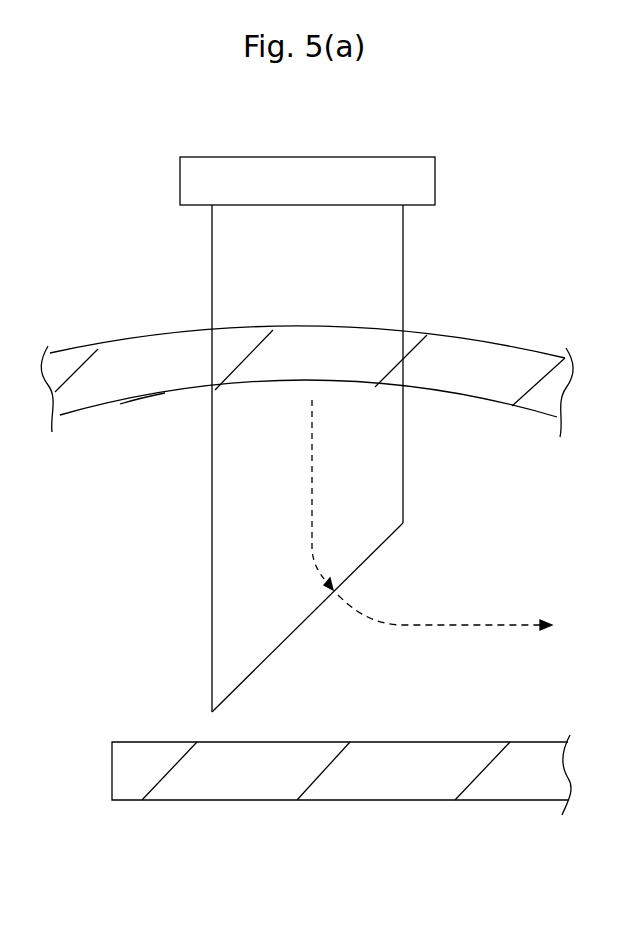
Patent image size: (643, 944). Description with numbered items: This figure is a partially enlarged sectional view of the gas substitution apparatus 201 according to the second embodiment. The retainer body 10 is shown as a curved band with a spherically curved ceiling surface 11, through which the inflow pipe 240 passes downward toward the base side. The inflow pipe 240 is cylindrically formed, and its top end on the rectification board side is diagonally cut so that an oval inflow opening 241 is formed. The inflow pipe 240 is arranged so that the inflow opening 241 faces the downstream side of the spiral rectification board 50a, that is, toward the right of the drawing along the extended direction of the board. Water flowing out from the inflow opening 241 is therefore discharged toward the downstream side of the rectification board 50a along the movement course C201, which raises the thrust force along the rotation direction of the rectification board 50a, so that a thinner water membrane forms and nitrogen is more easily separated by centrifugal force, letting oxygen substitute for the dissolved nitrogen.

The gas substitution apparatus 201 is at (115, 162).
The inflow pipe 240 is at (450, 150).
The retainer body 10 is at (478, 279).
The ceiling surface 11 is at (160, 393).
The inflow opening 241 is at (247, 678).
The movement course C201 is at (438, 622).
The rectification board 50a is at (278, 788).